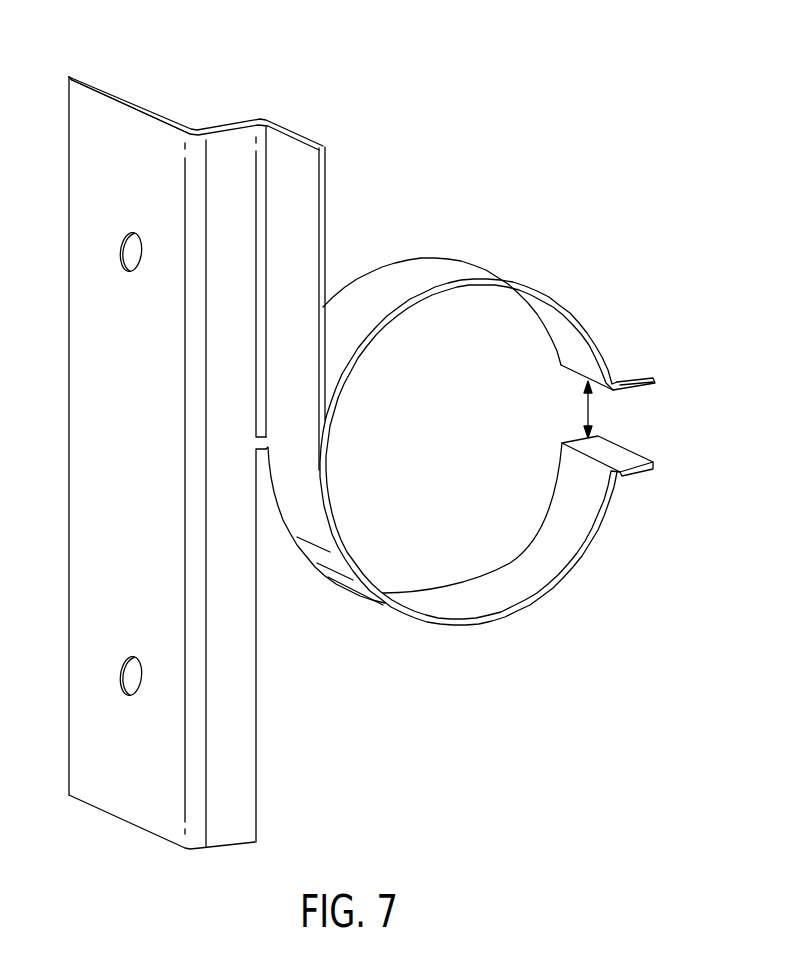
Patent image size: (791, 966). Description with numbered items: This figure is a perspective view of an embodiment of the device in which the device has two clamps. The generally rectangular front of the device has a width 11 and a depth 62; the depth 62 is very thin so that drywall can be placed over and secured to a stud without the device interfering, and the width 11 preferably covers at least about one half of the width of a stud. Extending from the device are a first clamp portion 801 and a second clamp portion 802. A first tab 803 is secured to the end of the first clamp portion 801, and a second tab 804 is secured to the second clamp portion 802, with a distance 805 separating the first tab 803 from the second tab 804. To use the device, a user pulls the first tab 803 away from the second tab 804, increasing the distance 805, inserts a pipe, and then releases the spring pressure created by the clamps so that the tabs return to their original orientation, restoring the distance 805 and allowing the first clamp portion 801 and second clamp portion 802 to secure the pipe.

The width 11 is at (189, 863).
The depth 62 is at (30, 64).
The first clamp portion 801 is at (590, 507).
The second clamp portion 802 is at (582, 348).
The first tab 803 is at (630, 458).
The second tab 804 is at (634, 377).
The distance 805 is at (584, 413).